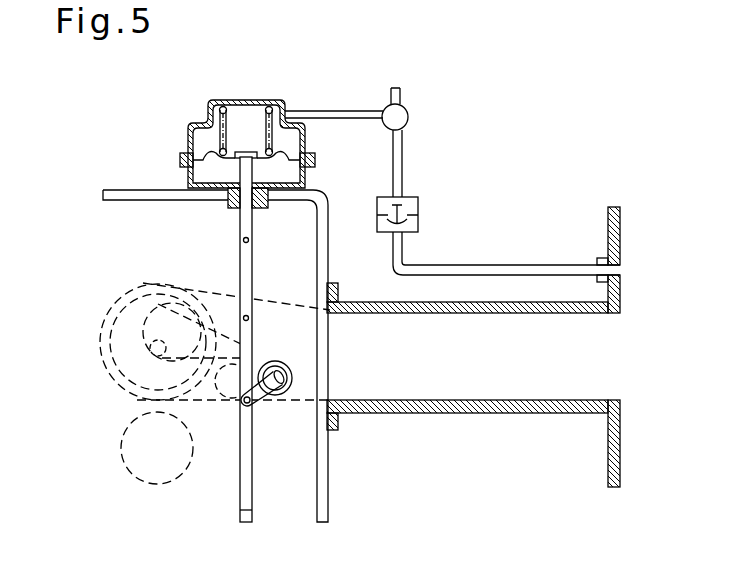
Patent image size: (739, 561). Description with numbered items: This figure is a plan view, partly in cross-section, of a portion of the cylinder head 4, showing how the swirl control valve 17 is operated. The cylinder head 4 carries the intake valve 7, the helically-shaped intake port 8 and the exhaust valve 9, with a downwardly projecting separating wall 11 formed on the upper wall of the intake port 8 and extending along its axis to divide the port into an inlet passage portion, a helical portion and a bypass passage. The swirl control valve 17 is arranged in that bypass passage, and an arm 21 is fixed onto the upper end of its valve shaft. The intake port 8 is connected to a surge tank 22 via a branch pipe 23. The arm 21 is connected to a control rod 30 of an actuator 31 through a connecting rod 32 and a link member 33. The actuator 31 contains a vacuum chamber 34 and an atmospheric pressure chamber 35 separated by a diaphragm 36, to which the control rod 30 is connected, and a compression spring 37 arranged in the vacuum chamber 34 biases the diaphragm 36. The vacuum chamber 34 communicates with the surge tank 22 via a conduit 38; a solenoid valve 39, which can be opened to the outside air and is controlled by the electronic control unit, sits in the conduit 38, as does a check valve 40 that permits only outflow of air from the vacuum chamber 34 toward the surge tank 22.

The cylinder head 4 is at (300, 496).
The intake valve 7 is at (112, 345).
The intake port 8 is at (203, 292).
The exhaust valve 9 is at (140, 455).
The separating wall 11 is at (160, 312).
The swirl control valve 17 is at (282, 412).
The arm 21 is at (260, 408).
The surge tank 22 is at (612, 456).
The branch pipe 23 is at (438, 408).
The control rod 30 is at (245, 226).
The actuator 31 is at (203, 98).
The connecting rod 32 is at (240, 495).
The link member 33 is at (247, 268).
The vacuum chamber 34 is at (208, 137).
The atmospheric pressure chamber 35 is at (207, 173).
The diaphragm 36 is at (290, 152).
The compression spring 37 is at (261, 102).
The conduit 38 is at (367, 119).
The solenoid valve 39 is at (406, 118).
The check valve 40 is at (418, 216).